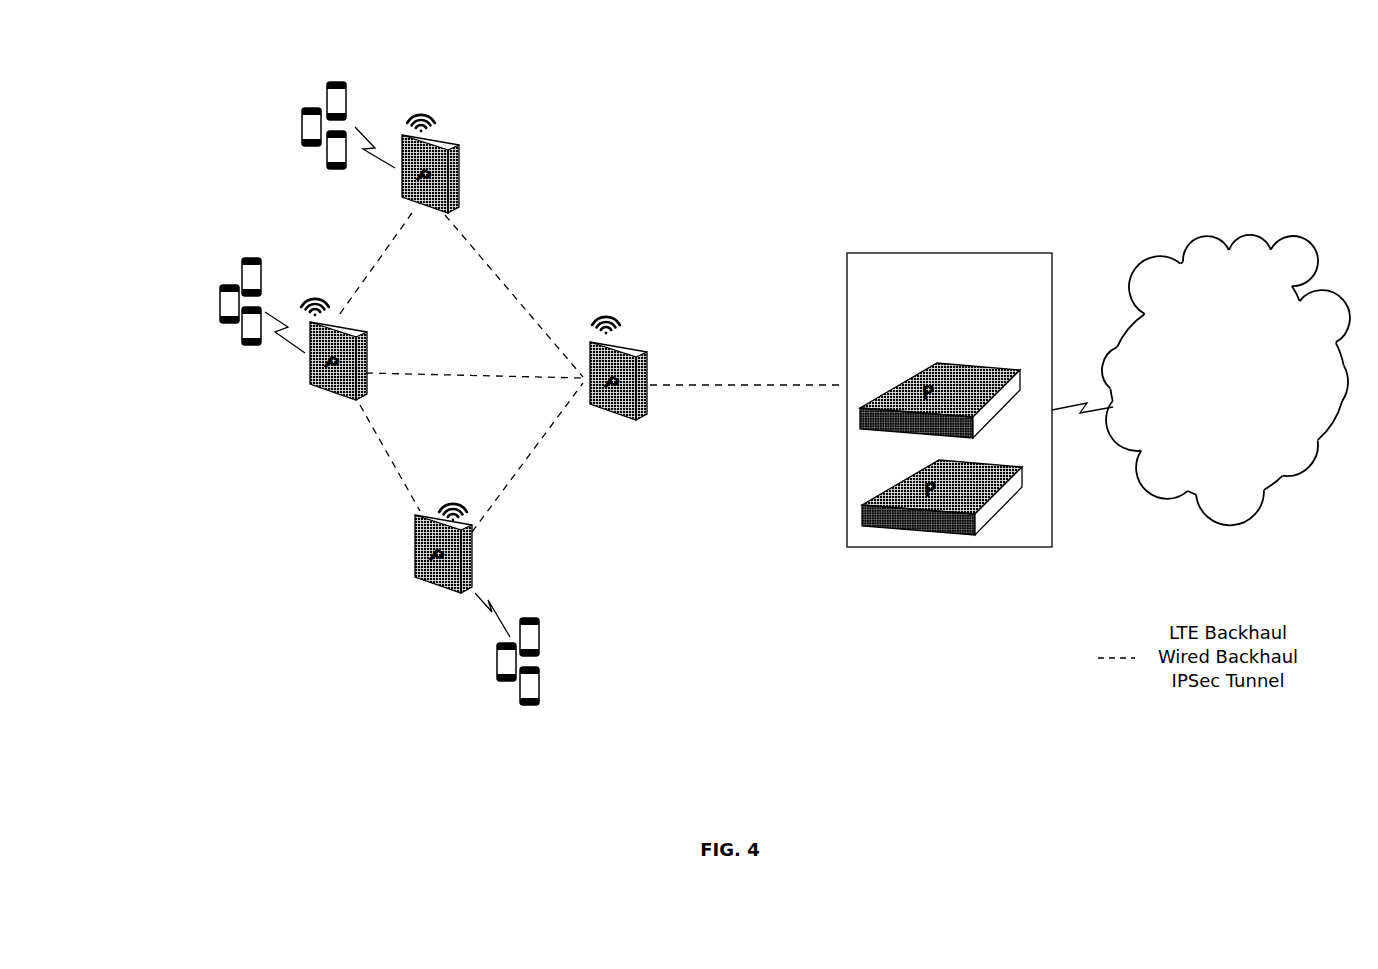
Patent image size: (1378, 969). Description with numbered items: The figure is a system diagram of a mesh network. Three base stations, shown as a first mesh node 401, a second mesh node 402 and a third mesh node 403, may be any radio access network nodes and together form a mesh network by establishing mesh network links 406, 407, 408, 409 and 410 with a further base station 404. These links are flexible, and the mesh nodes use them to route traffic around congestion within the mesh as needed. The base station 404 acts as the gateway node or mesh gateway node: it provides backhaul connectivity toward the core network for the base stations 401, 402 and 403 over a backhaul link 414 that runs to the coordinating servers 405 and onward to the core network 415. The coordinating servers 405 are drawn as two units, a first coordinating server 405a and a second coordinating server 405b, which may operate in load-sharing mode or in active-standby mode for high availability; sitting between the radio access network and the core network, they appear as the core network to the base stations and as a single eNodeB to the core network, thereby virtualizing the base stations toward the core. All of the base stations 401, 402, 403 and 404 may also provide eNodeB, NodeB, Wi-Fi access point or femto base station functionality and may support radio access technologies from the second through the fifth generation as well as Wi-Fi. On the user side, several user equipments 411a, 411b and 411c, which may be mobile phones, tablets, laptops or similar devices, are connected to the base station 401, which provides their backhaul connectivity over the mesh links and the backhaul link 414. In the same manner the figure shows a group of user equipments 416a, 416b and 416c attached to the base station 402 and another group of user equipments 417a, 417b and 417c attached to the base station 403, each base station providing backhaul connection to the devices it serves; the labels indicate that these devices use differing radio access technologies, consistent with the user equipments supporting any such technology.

The mesh node 1 (base station) 401 is at (447, 148).
The mesh node 2 (base station) 402 is at (308, 388).
The mesh node 3 (base station) 403 is at (427, 592).
The base station (gateway node) 404 is at (635, 347).
The coordinating servers 405 is at (949, 374).
The coordinating server 405a is at (1000, 363).
The coordinating server 405b is at (1000, 458).
The mesh network link 406 is at (377, 285).
The mesh network link 407 is at (520, 298).
The mesh network link 408 is at (382, 450).
The mesh network link 409 is at (540, 448).
The mesh network link 410 is at (472, 368).
The user equipment 411a is at (300, 112).
The user equipment 411b is at (325, 171).
The user equipment 411c is at (348, 102).
The backhaul link 414 is at (763, 393).
The core network 415 is at (1227, 242).
The 4G UE 416a is at (217, 307).
The 3G UE 416b is at (250, 255).
The 5G UE 416c is at (240, 333).
The Wi-Fi UE 417a is at (493, 657).
The 3G UE 417b is at (530, 708).
The 4G UE 417c is at (531, 612).